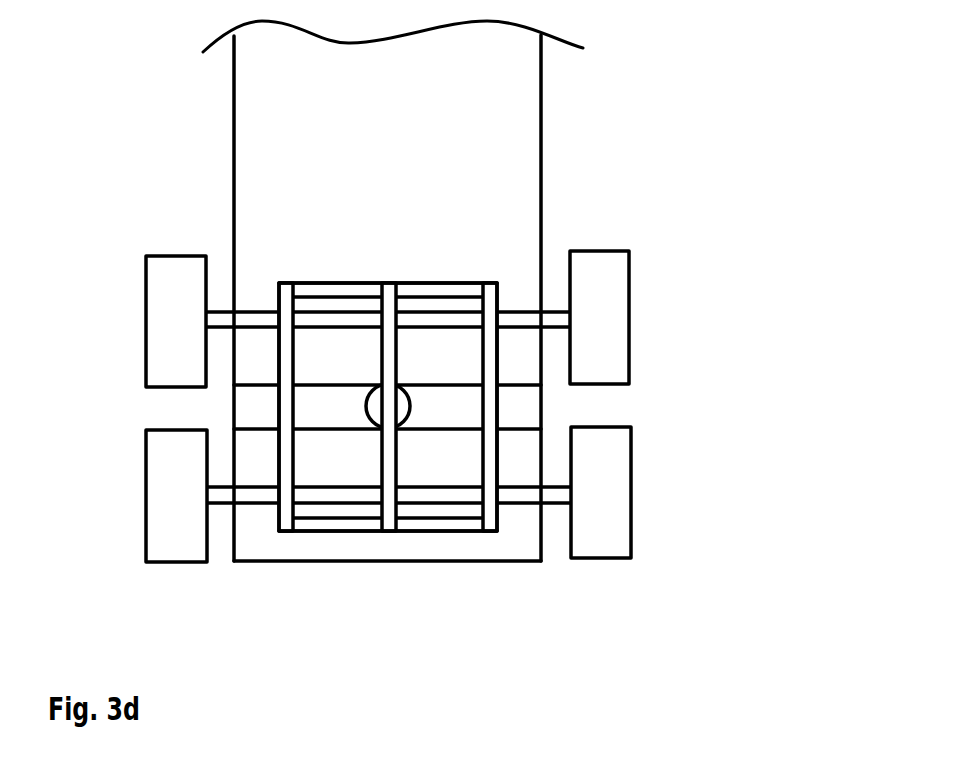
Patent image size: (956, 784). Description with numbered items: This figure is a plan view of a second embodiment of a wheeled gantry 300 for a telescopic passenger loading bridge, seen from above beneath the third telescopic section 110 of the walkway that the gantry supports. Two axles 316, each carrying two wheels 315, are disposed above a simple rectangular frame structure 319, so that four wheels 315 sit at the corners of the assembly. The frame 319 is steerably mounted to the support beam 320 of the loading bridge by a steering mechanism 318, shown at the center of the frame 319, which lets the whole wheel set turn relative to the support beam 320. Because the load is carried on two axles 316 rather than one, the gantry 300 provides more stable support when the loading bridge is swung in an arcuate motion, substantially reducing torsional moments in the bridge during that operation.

The third telescopic section 110 is at (335, 291).
The wheeled gantry 300 is at (522, 295).
The wheels 315 is at (146, 297).
The axles 316 is at (513, 503).
The steering mechanism 318 is at (413, 403).
The frame structure 319 is at (352, 518).
The support beam 320 is at (527, 413).